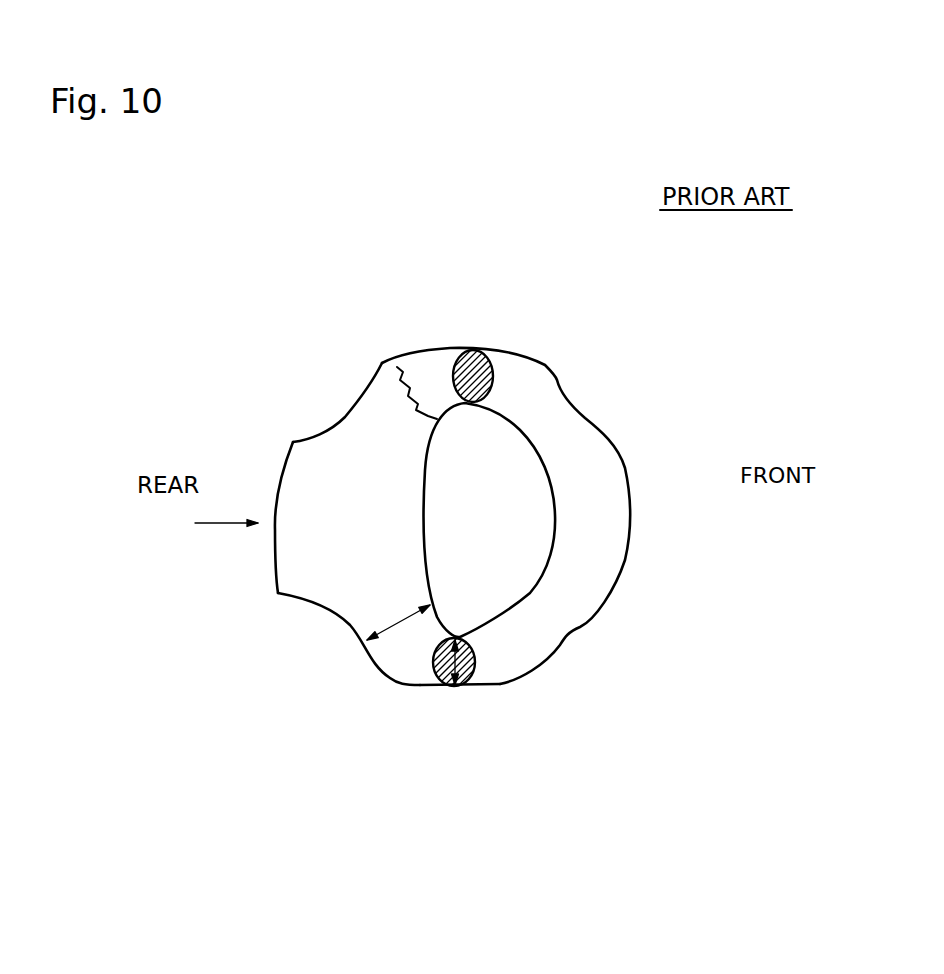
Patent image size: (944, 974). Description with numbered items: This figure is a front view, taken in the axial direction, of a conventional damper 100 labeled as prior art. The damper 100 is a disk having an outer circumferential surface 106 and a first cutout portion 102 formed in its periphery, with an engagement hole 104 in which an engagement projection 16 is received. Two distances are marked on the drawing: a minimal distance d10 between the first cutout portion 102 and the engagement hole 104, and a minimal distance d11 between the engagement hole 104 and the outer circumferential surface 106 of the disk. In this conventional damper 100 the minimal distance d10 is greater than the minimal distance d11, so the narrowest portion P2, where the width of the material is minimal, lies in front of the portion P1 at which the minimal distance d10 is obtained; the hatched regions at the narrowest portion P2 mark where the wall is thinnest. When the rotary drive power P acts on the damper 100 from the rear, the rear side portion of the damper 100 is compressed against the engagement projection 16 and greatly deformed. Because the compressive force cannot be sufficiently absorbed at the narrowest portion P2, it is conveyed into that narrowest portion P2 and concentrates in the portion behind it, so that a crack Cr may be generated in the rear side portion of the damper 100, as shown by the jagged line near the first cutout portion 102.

The damper 100 is at (579, 379).
The first cutout portion 102 is at (342, 420).
The engagement hole 104 is at (504, 616).
The outer circumferential surface 106 is at (426, 684).
The engagement projection 16 is at (527, 503).
The narrowest portion P2 is at (475, 372).
The portion at which minimal distance d10 is obtained P1 is at (363, 620).
The rotary drive power P is at (221, 526).
The crack Cr is at (407, 392).
The minimal distance between first cutout portion and engagement hole d10 is at (397, 623).
The minimal distance between engagement hole and outer circumferential surface d11 is at (437, 686).